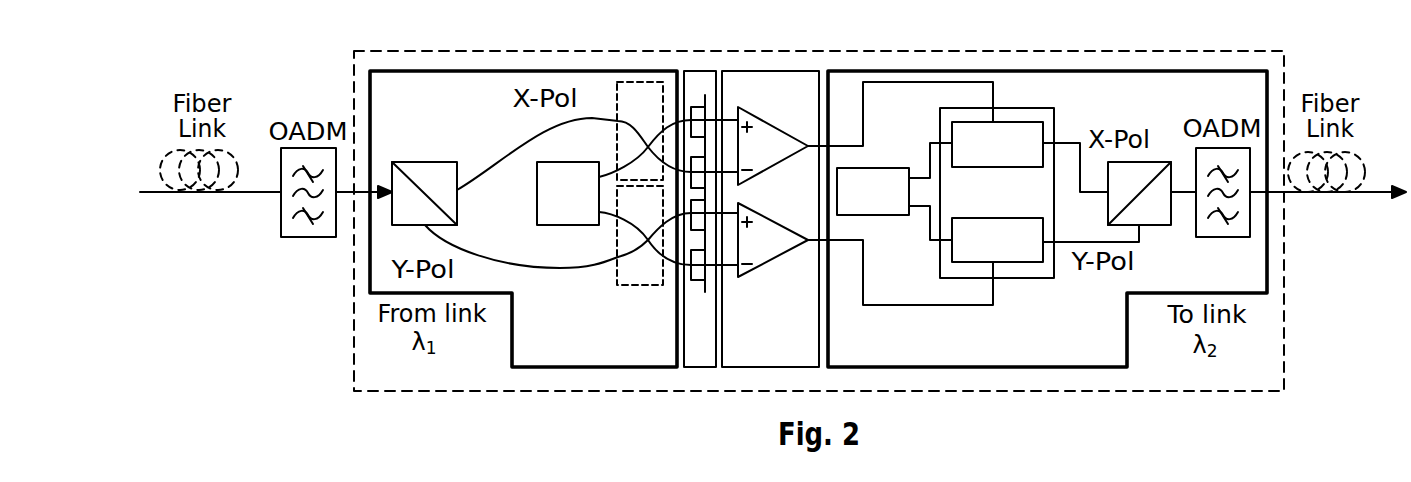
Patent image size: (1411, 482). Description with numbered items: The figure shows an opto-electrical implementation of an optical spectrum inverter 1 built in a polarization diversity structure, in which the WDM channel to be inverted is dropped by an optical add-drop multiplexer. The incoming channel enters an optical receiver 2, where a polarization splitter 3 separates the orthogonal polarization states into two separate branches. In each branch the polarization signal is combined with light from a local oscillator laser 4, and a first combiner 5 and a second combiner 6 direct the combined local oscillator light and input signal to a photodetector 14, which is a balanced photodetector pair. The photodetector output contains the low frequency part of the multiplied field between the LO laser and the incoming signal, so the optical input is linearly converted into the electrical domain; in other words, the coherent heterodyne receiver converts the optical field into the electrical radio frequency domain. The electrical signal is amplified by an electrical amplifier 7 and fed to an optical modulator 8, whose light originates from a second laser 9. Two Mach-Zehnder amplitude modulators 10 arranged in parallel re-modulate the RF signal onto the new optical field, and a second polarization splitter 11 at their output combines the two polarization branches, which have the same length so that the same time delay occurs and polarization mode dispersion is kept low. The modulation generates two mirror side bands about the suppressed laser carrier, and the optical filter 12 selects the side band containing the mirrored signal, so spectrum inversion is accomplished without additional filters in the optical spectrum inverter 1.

The optical spectrum inverter 1 is at (1276, 51).
The optical receiver 2 is at (616, 369).
The polarization splitter 3 is at (452, 163).
The local oscillator laser 4 is at (590, 160).
The first combiner 5 is at (654, 89).
The second combiner 6 is at (635, 272).
The electrical amplifier 7 is at (742, 350).
The optical modulator 8 is at (1109, 369).
The second laser 9 is at (887, 172).
The Mach-Zehnder amplitude modulators 10 is at (1047, 129).
The second polarization splitter 11 is at (1153, 163).
The optical filter 12 is at (1215, 230).
The photodetector 14 is at (700, 84).